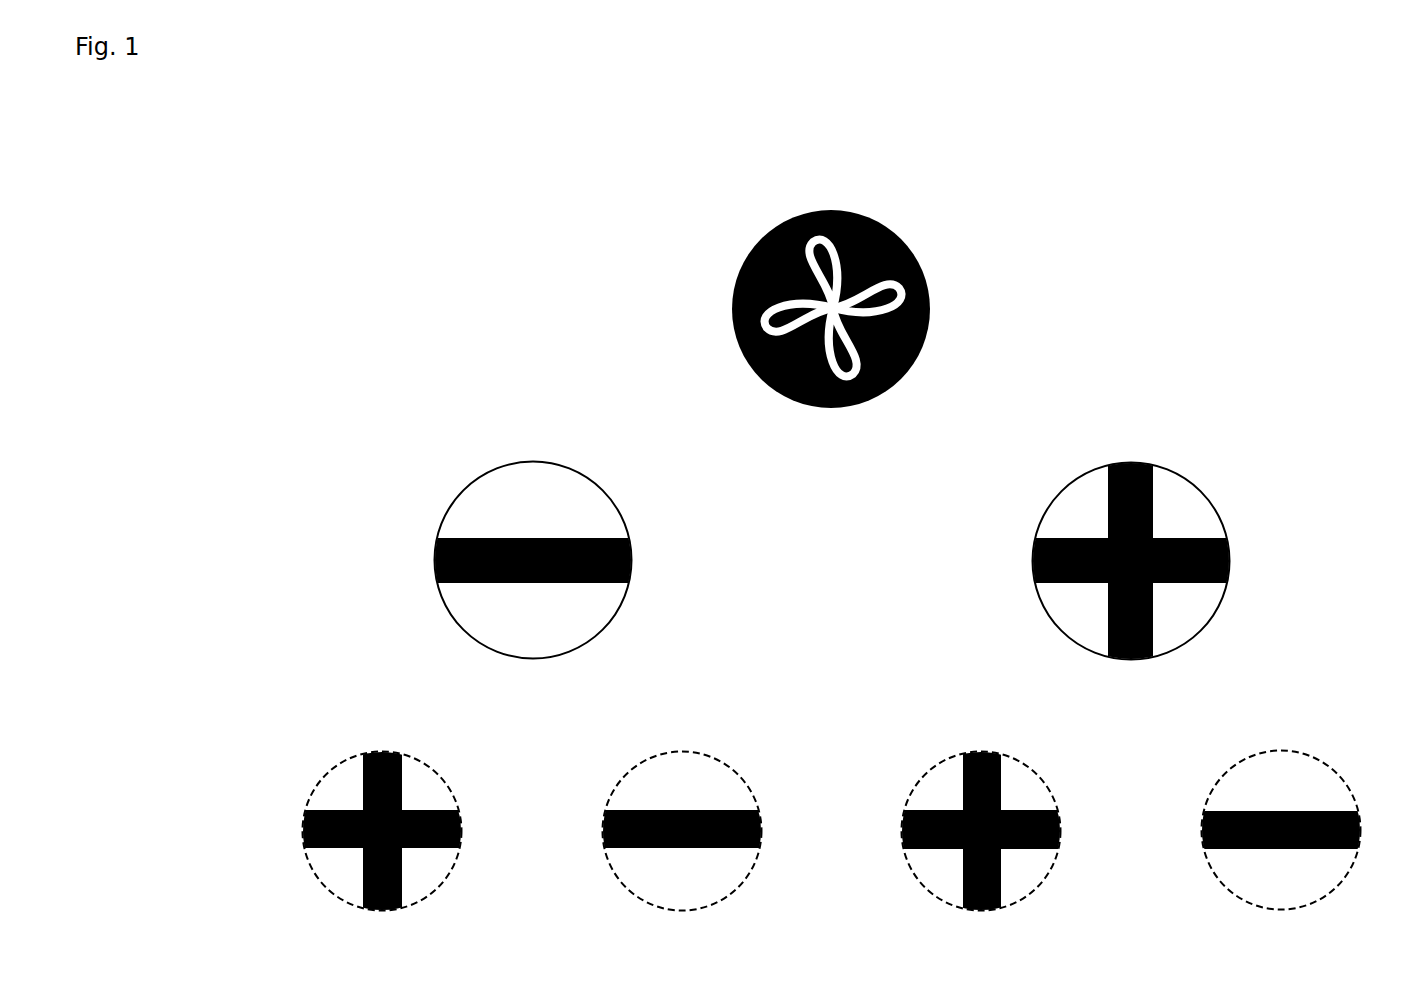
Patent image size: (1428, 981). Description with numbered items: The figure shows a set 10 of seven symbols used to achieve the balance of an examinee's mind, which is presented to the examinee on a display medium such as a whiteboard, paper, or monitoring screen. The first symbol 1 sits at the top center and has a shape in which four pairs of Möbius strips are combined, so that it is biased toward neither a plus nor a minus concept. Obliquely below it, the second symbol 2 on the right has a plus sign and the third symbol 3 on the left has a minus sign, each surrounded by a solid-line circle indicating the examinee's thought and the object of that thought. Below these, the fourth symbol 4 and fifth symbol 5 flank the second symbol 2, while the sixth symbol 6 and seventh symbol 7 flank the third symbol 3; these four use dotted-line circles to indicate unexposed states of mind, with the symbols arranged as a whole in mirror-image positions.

The set of symbols 10 is at (1295, 222).
The first symbol 1 is at (910, 247).
The second symbol 2 is at (1200, 487).
The third symbol 3 is at (465, 487).
The fourth symbol 4 is at (1305, 755).
The fifth symbol 5 is at (962, 753).
The sixth symbol 6 is at (705, 754).
The seventh symbol 7 is at (363, 753).